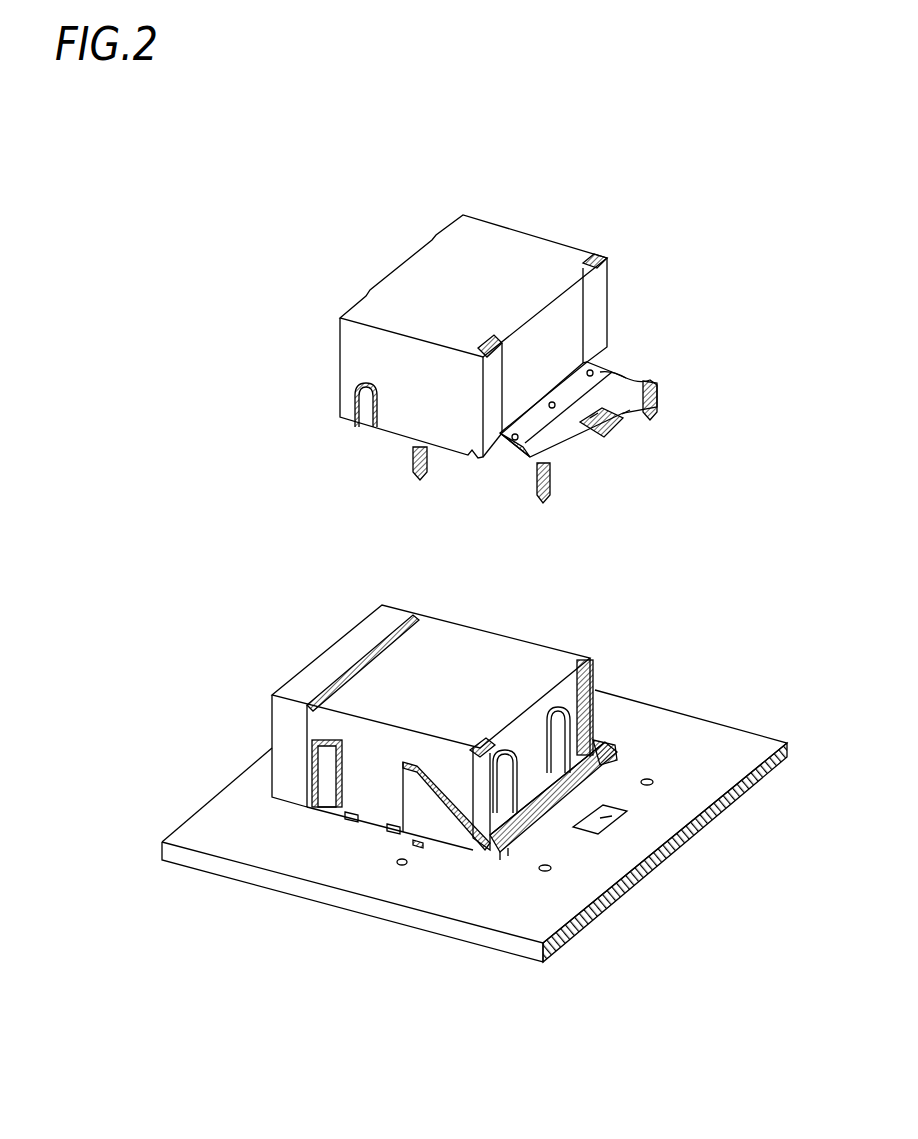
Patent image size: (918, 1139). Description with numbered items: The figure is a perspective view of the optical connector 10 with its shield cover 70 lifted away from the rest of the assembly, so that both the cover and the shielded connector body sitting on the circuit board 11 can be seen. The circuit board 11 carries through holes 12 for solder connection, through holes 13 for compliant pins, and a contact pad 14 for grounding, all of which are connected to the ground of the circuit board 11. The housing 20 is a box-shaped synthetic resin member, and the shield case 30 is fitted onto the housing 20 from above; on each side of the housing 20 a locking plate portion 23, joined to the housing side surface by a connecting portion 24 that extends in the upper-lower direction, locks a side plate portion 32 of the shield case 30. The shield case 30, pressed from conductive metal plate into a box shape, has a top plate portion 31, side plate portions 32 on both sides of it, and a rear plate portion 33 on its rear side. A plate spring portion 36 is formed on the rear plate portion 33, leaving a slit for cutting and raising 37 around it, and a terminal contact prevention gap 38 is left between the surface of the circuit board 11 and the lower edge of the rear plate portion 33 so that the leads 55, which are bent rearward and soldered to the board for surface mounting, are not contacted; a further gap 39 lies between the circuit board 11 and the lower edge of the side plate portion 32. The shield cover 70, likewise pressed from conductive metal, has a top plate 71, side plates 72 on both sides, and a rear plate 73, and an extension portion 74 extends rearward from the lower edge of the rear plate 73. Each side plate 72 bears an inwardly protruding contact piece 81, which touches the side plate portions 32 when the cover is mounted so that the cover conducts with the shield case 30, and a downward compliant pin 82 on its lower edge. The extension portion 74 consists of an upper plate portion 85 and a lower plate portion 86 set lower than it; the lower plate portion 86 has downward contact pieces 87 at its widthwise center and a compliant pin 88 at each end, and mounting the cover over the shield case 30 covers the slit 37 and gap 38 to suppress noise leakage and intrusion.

The optical connector 10 is at (272, 238).
The circuit board 11 is at (330, 906).
The through holes for solder connection 12 is at (392, 832).
The through holes for compliant pins 13 is at (397, 868).
The contact pad for grounding 14 is at (627, 822).
The housing 20 is at (397, 600).
The locking plate portion 23 is at (403, 768).
The connecting portion 24 is at (412, 758).
The shield case 30 is at (522, 630).
The top plate portion 31 is at (486, 645).
The side plate portion 32 is at (335, 772).
The rear plate portion 33 is at (548, 705).
The plate spring portion 36 is at (574, 760).
The slit for cutting and raising 37 is at (585, 740).
The terminal contact prevention gap 38 is at (605, 790).
The gap 39 is at (435, 855).
The lead 55 is at (533, 835).
The shield cover 70 is at (560, 225).
The top plate 71 is at (485, 240).
The side plate 72 is at (352, 362).
The rear plate 73 is at (598, 305).
The extension portion 74 is at (618, 382).
The contact piece 81 is at (350, 410).
The compliant pin 82 is at (412, 470).
The upper plate portion 85 is at (605, 368).
The lower plate portion 86 is at (638, 424).
The contact pieces 87 is at (595, 420).
The compliant pin 88 is at (660, 390).